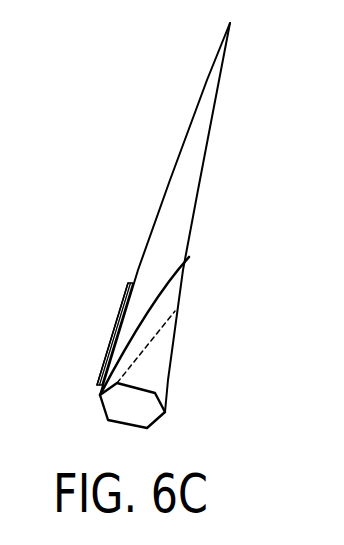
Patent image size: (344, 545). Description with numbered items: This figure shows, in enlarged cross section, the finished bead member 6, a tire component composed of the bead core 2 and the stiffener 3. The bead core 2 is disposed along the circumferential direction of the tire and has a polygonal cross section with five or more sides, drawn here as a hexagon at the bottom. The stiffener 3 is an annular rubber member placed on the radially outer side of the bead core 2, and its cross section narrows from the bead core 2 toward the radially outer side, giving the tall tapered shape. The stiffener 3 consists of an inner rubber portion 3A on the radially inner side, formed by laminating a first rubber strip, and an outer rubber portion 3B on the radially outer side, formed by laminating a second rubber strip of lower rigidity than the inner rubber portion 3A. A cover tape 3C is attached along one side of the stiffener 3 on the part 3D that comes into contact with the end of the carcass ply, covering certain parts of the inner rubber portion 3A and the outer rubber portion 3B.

The bead core 2 is at (117, 405).
The stiffener 3 is at (158, 231).
The inner rubber portion 3A is at (160, 358).
The outer rubber portion 3B is at (187, 203).
The cover tape 3C is at (107, 345).
The part of the stiffener 3D is at (125, 313).
The bead member 6 is at (120, 288).